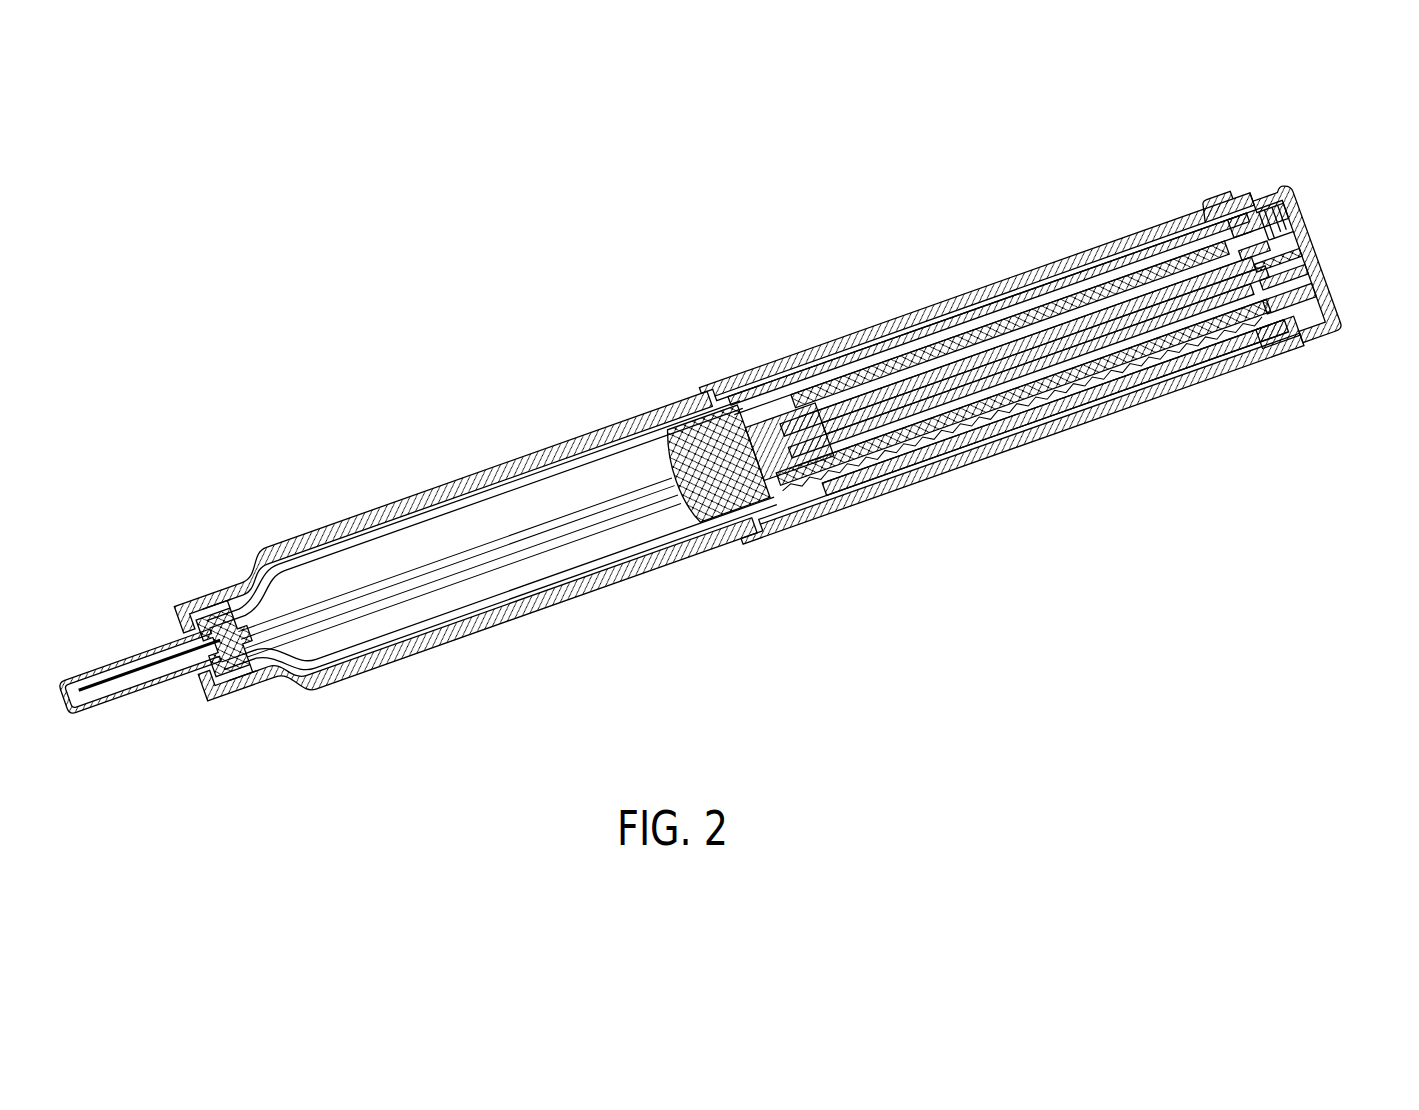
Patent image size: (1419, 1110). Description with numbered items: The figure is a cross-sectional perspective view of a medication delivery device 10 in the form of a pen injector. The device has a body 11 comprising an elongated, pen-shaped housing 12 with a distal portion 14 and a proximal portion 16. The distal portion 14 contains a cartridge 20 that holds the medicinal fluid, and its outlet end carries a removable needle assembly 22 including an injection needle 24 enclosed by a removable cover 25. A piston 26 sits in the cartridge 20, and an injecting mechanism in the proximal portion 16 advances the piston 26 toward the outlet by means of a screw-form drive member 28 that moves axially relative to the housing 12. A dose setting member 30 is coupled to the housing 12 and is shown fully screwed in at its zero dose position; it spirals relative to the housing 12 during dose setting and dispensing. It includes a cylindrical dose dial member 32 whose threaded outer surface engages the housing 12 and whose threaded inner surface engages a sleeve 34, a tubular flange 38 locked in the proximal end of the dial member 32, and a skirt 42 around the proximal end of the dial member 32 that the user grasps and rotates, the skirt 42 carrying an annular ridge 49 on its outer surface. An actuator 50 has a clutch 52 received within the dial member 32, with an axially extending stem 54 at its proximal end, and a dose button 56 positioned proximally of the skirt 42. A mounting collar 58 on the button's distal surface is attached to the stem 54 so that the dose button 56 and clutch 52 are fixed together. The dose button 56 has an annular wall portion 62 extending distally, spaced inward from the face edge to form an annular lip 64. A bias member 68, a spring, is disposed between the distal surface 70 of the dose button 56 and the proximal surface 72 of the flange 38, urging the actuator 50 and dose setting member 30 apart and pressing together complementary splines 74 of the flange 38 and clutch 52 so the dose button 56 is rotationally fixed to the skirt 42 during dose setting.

The medication delivery device 10 is at (601, 347).
The body 11 is at (1010, 222).
The housing 12 is at (822, 336).
The distal portion 14 is at (450, 469).
The proximal portion 16 is at (1093, 440).
The cartridge 20 is at (467, 599).
The needle assembly 22 is at (143, 614).
The injection needle 24 is at (108, 667).
The cover 25 is at (118, 696).
The piston 26 is at (737, 496).
The drive member 28 is at (898, 471).
The dose setting member 30 is at (1393, 420).
The dose dial member 32 is at (1207, 366).
The sleeve 34 is at (935, 431).
The tubular flange 38 is at (1257, 346).
The skirt 42 is at (1315, 357).
The annular ridge 49 is at (1213, 209).
The actuator 50 is at (1302, 164).
The clutch 52 is at (1128, 269).
The stem 54 is at (1310, 246).
The dose button 56 is at (1320, 282).
The mounting collar 58 is at (1262, 205).
The annular wall portion 62 is at (1333, 347).
The annular lip 64 is at (1330, 327).
The bias member 68 is at (1320, 297).
The distal surface 70 is at (1320, 290).
The proximal surface 72 is at (1226, 207).
The splines 74 is at (1152, 249).